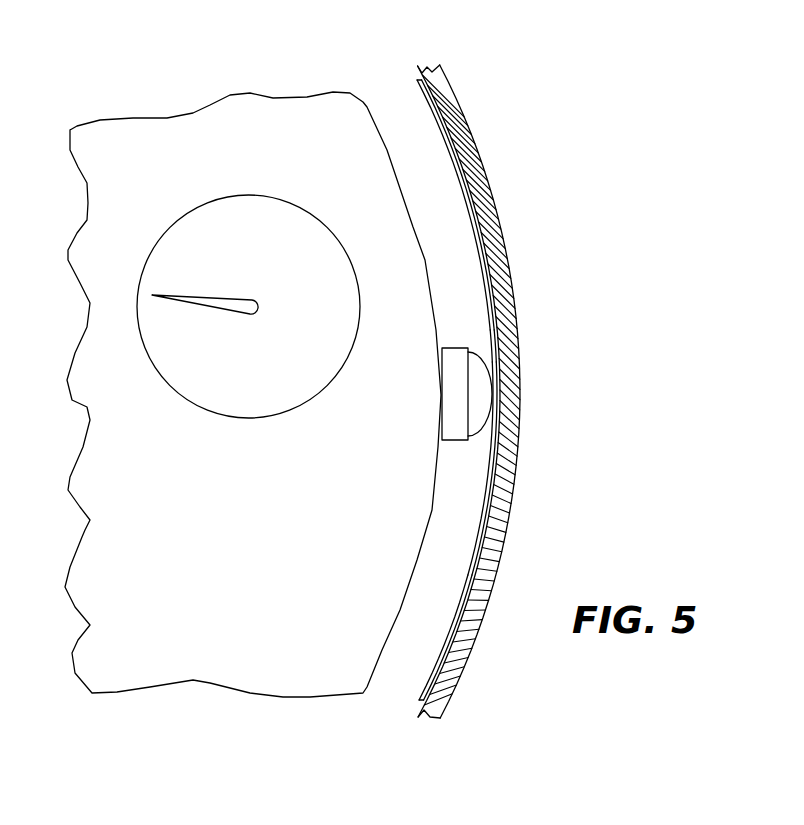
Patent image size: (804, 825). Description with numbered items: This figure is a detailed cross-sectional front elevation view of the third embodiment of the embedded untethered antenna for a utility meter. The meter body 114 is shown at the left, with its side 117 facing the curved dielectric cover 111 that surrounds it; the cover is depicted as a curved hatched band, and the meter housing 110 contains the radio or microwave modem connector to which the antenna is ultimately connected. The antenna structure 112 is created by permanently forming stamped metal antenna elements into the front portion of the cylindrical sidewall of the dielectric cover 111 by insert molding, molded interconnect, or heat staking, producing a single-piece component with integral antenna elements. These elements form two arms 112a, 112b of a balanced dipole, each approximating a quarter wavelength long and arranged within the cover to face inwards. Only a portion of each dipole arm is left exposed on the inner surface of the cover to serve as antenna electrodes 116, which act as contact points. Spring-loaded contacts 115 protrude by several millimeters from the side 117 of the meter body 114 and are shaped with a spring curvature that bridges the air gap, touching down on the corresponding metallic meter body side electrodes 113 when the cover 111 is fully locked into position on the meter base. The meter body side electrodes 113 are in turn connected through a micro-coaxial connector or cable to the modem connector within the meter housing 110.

The meter housing 110 is at (380, 153).
The dielectric cover 111 is at (488, 206).
The antenna structure 112 is at (487, 277).
The first dipole arm 112a is at (458, 174).
The second dipole arm 112b is at (479, 582).
The meter body side electrodes 113 is at (480, 438).
The meter body 114 is at (321, 467).
The spring-loaded contacts 115 is at (460, 433).
The antenna electrodes 116 is at (484, 348).
The side of the meter body 117 is at (372, 113).